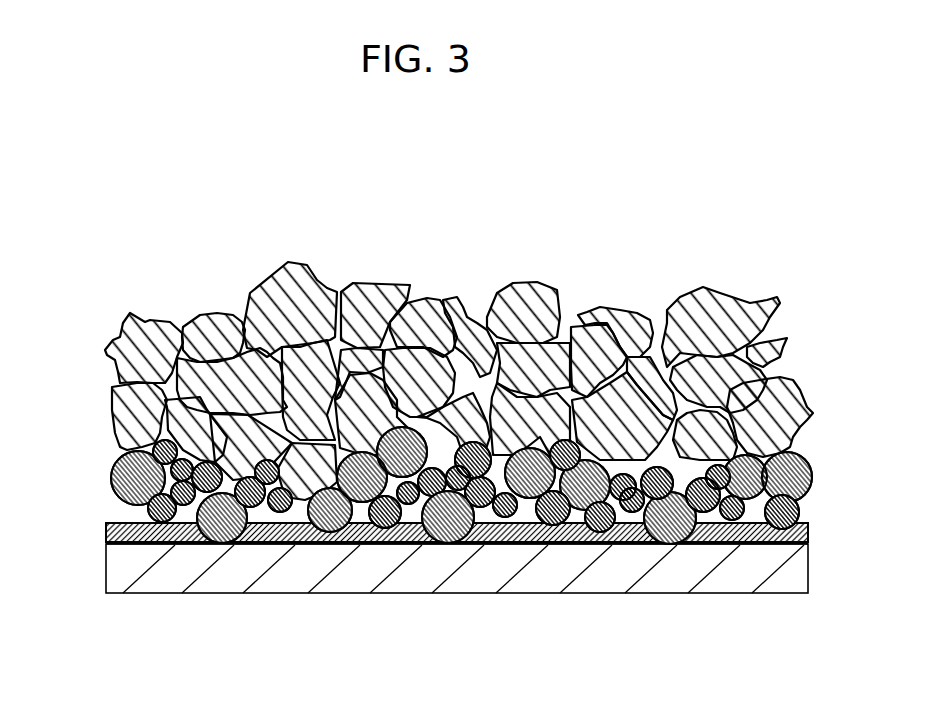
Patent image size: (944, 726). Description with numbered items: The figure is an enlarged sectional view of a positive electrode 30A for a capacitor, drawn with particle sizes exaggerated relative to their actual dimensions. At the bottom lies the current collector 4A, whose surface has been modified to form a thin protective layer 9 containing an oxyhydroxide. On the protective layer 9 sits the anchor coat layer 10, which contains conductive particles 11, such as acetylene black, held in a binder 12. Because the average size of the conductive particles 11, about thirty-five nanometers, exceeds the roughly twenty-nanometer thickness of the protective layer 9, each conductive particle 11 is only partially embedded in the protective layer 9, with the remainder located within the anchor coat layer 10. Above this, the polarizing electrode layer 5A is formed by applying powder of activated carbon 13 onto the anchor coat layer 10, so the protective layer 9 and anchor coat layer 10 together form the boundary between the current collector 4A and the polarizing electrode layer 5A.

The positive electrode 30A is at (808, 268).
The polarizing electrode layer 5A is at (92, 265).
The activated carbon 13 is at (372, 290).
The anchor coat layer 10 is at (822, 450).
The binder 12 is at (450, 533).
The conductive particles 11 is at (610, 520).
The protective layer 9 is at (178, 532).
The current collector 4A is at (298, 580).